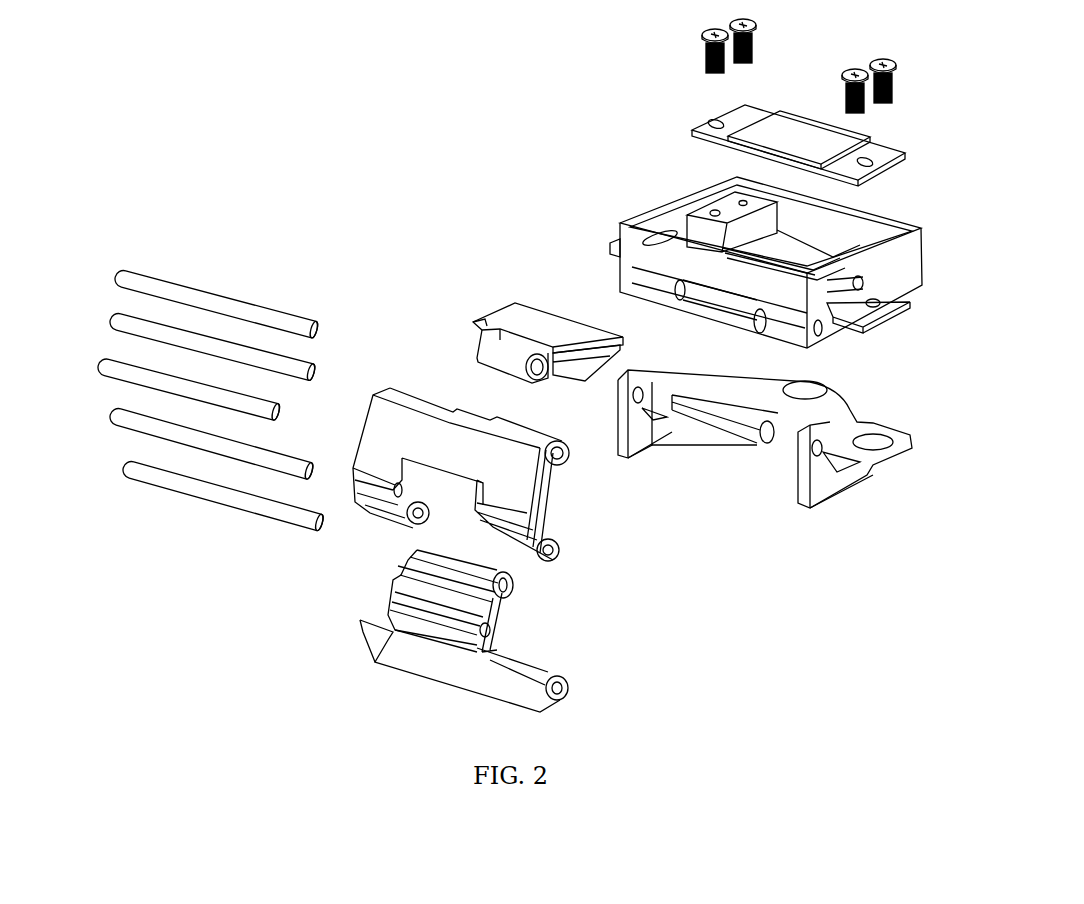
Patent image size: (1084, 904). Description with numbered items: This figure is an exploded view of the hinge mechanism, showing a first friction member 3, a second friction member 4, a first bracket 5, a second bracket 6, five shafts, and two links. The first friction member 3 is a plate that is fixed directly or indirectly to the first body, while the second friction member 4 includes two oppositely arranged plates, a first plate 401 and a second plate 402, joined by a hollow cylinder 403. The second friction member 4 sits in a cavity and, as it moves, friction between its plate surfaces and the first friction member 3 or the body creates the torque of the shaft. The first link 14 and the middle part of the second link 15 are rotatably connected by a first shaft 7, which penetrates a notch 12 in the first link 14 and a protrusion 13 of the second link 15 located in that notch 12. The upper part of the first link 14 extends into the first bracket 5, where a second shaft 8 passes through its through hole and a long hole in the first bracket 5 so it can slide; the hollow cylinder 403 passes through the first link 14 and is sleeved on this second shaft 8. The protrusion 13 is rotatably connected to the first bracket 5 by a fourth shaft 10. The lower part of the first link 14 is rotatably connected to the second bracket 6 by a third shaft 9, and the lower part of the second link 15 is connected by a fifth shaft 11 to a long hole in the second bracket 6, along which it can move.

The first friction member 3 is at (757, 123).
The second friction member 4 is at (541, 302).
The first plate 401 is at (540, 323).
The second plate 402 is at (603, 360).
The hollow cylinder 403 is at (503, 362).
The first bracket 5 is at (680, 208).
The second bracket 6 is at (868, 423).
The first shaft 7 is at (127, 370).
The second shaft 8 is at (192, 297).
The third shaft 9 is at (145, 427).
The fourth shaft 10 is at (137, 325).
The fifth shaft 11 is at (153, 482).
The notch 12 is at (440, 488).
The protrusion 13 is at (465, 573).
The first link 14 is at (503, 458).
The second link 15 is at (497, 673).